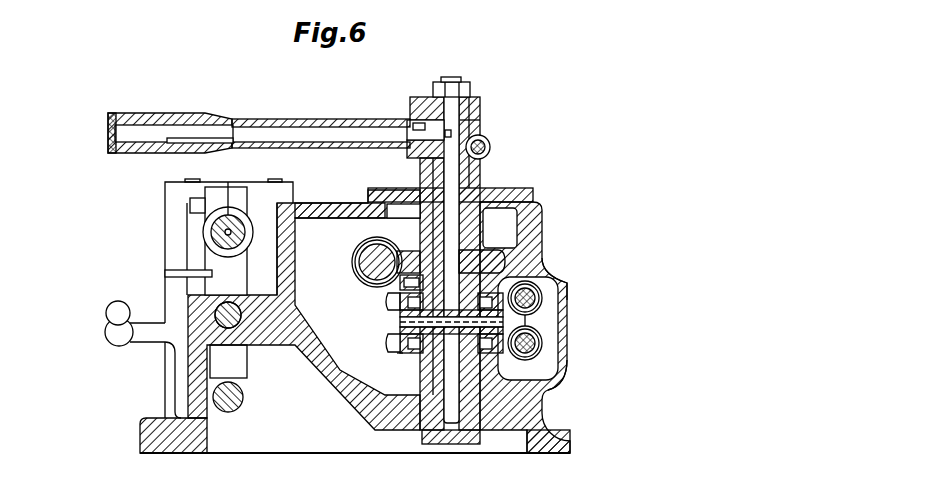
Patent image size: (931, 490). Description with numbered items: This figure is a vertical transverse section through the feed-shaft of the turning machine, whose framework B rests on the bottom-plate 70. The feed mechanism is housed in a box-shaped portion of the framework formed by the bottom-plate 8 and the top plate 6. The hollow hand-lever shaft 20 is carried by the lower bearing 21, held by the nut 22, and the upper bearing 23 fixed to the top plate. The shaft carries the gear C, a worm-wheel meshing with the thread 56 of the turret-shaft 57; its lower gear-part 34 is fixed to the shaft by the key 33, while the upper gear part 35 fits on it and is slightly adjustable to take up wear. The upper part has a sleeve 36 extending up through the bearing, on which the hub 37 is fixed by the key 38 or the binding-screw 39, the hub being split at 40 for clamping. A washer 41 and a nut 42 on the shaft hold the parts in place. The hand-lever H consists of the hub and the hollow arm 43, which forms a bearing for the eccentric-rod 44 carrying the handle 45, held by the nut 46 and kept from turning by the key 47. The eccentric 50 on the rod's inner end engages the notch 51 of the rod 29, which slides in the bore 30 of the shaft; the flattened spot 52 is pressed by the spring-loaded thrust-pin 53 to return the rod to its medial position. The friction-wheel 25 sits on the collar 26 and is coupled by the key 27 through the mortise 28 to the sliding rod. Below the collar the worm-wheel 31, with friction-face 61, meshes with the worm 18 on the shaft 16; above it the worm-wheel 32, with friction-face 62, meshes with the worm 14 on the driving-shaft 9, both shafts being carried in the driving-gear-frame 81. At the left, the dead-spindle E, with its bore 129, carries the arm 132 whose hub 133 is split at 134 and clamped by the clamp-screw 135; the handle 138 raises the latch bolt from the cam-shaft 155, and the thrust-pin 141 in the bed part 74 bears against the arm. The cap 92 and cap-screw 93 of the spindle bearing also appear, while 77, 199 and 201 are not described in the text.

The top plate 6 is at (333, 203).
The bottom-plate 8 is at (383, 430).
The driving-shaft 9 is at (538, 324).
The worm 14 is at (543, 296).
The shaft 16 is at (560, 378).
The worm 18 is at (543, 345).
The hand-lever shaft 20 is at (444, 387).
The lower bearing 21 is at (478, 398).
The nut 22 is at (438, 444).
The upper bearing 23 is at (533, 195).
The friction-wheel 25 is at (400, 315).
The collar 26 is at (500, 355).
The key 27 is at (400, 331).
The mortise 28 is at (412, 352).
The rod 29 is at (452, 180).
The bore 30 is at (451, 423).
The worm-wheel 31 is at (390, 347).
The worm-wheel 32 is at (388, 300).
The key 33 is at (500, 268).
The lower gear-part 34 is at (411, 282).
The upper gear part 35 is at (492, 252).
The sleeve 36 is at (420, 231).
The hub 37 is at (480, 112).
The key 38 is at (420, 162).
The binding-screw 39 is at (486, 148).
The split 40 is at (478, 136).
The washer 41 is at (462, 84).
The nut 42 is at (448, 82).
The hollow arm 43 is at (275, 119).
The eccentric-rod 44 is at (340, 132).
The handle 45 is at (192, 113).
The nut 46 is at (108, 145).
The key 47 is at (170, 153).
The eccentric 50 is at (451, 133).
The notch 51 is at (482, 98).
The flattened spot 52 is at (407, 150).
The thrust-pin 53 is at (410, 108).
The thread 56 is at (360, 262).
The turret-shaft 57 is at (366, 253).
The friction-face 61 is at (397, 356).
The friction-face 62 is at (398, 307).
The bottom-plate 70 is at (140, 433).
The part of the bed 74 is at (190, 240).
The casing 77 is at (542, 225).
The driving-gear-frame 81 is at (565, 310).
The cap 92 is at (190, 188).
The cap-screw 93 is at (280, 181).
The bore 129 is at (238, 228).
The arm 132 is at (247, 268).
The hub 133 is at (205, 242).
The split 134 is at (229, 185).
The clamp-screw 135 is at (188, 205).
The handle 138 is at (175, 275).
The thrust-pin 141 is at (228, 300).
The cam-shaft 155 is at (243, 397).
The pipe 199 is at (142, 343).
The knob 201 is at (112, 305).
The framework B is at (300, 443).
The gear C is at (505, 258).
The dead-spindle E is at (243, 237).
The hand-lever H is at (317, 101).